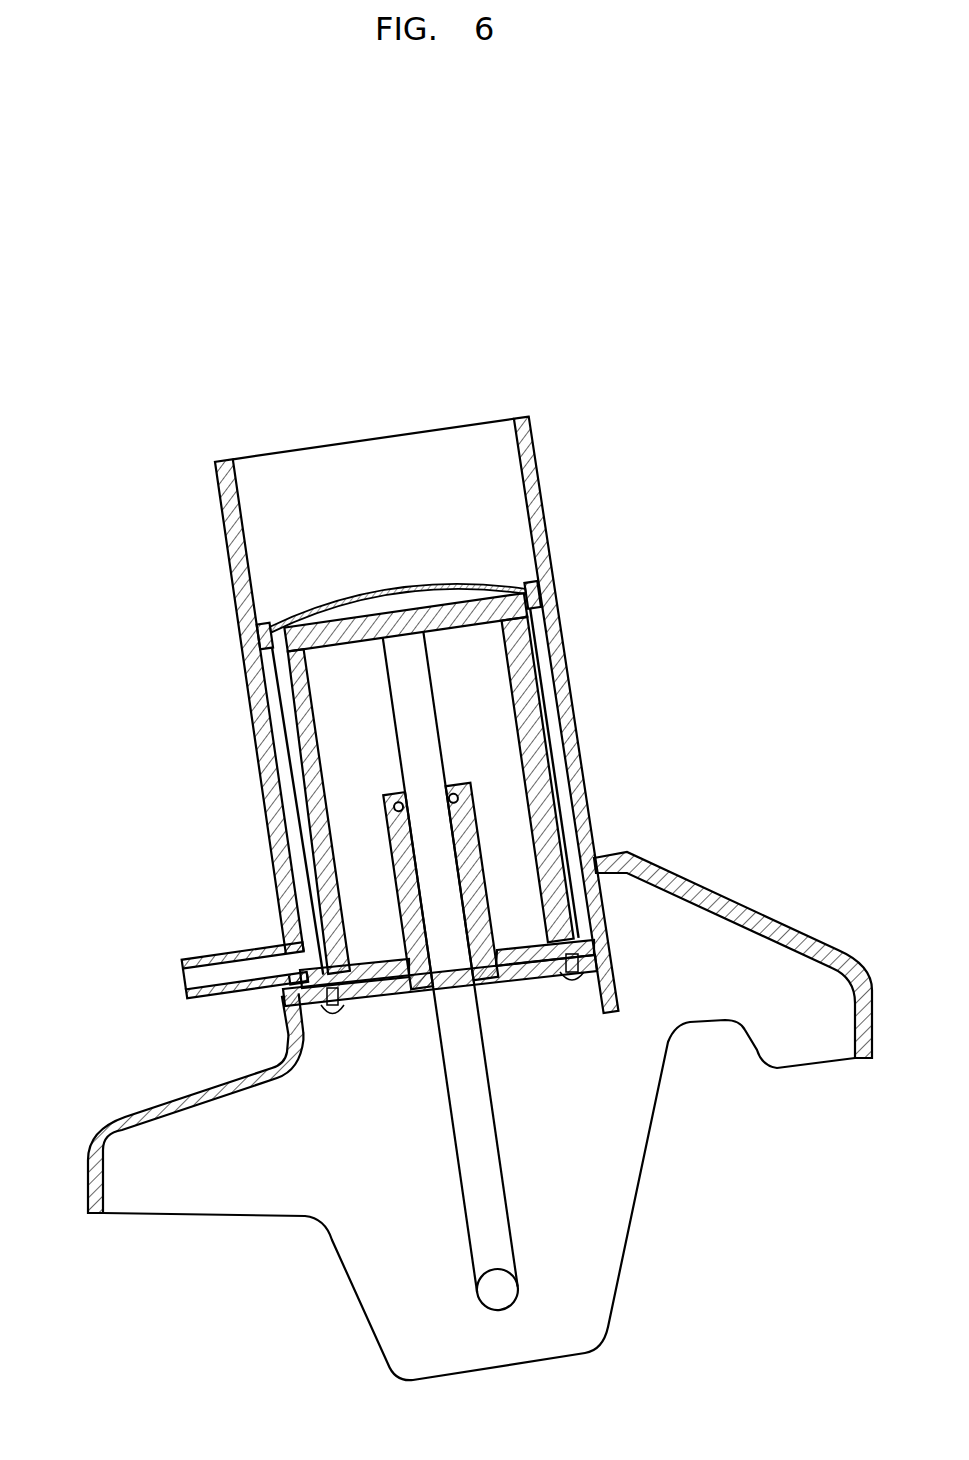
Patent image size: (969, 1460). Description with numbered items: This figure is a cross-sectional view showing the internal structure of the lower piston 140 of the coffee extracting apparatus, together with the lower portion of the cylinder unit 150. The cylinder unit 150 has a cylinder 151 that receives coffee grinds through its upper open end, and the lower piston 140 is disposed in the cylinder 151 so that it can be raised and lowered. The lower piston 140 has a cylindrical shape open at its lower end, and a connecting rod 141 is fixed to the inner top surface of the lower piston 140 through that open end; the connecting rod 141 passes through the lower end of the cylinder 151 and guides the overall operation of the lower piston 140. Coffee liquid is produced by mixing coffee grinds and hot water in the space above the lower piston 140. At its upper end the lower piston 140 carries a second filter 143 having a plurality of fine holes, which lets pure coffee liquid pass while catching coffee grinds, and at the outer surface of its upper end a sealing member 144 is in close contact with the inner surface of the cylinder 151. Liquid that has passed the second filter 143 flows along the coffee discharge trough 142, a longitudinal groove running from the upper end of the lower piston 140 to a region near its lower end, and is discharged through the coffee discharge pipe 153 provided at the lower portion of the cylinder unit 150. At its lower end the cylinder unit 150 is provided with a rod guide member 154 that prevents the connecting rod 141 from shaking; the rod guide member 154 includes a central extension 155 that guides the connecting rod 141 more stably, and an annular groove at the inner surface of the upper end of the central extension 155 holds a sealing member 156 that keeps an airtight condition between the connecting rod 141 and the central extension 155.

The lower piston 140 is at (520, 655).
The connecting rod 141 is at (485, 1100).
The coffee discharge trough 142 is at (293, 740).
The second filter 143 is at (510, 582).
The sealing member 144 is at (262, 632).
The cylinder unit 150 is at (668, 826).
The cylinder 151 is at (533, 443).
The coffee discharge pipe 153 is at (187, 988).
The rod guide member 154 is at (388, 1003).
The central extension 155 is at (405, 860).
The sealing member 156 is at (468, 792).